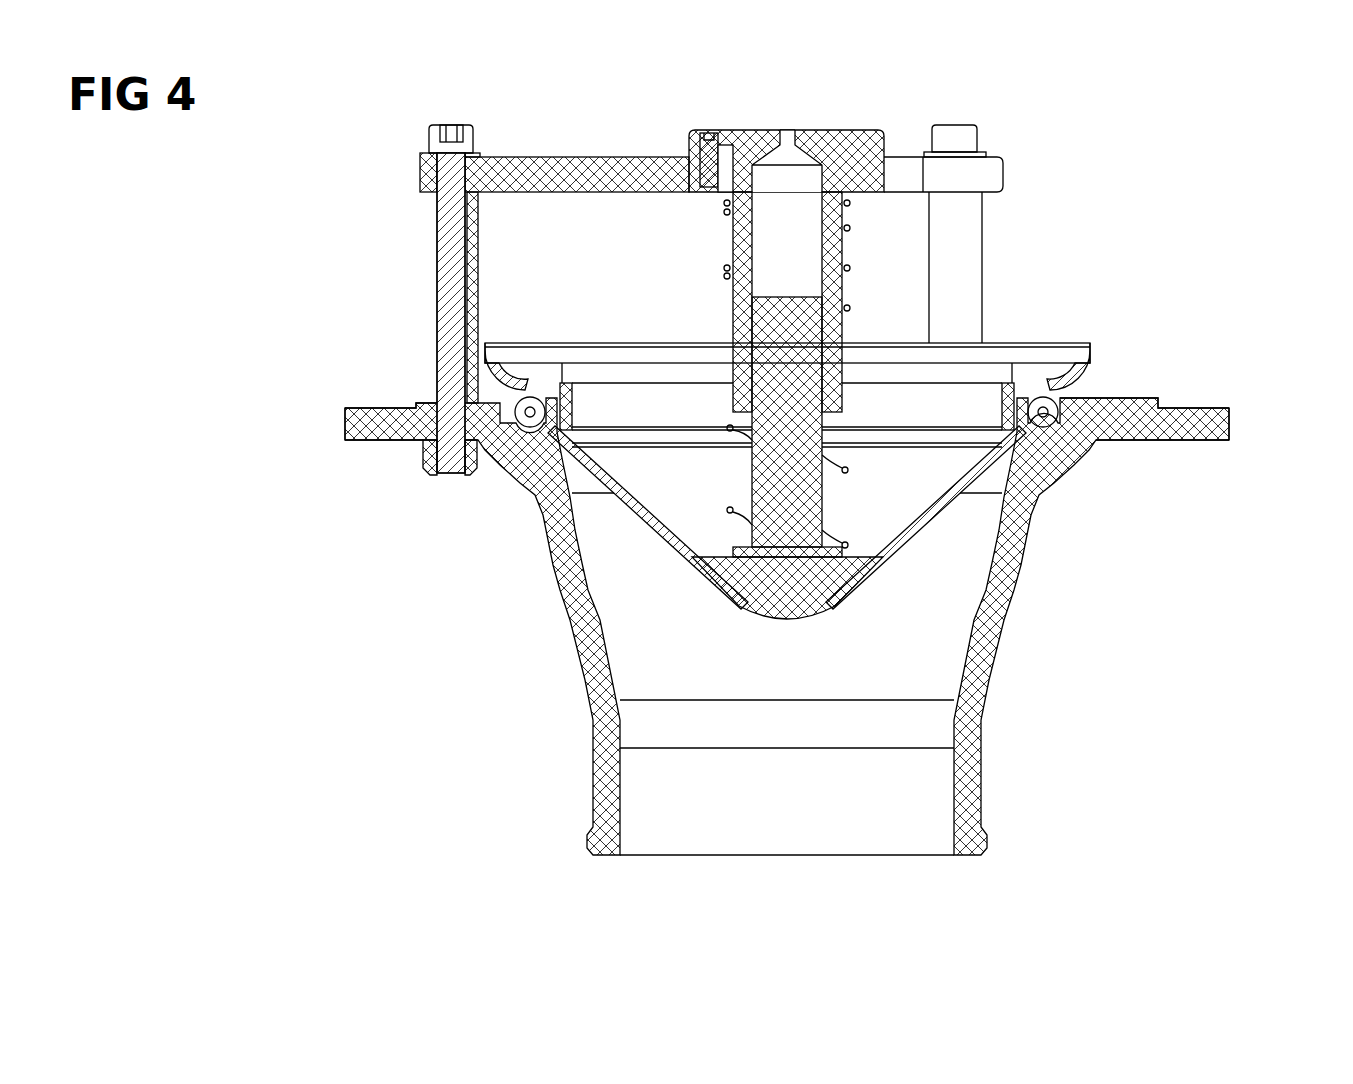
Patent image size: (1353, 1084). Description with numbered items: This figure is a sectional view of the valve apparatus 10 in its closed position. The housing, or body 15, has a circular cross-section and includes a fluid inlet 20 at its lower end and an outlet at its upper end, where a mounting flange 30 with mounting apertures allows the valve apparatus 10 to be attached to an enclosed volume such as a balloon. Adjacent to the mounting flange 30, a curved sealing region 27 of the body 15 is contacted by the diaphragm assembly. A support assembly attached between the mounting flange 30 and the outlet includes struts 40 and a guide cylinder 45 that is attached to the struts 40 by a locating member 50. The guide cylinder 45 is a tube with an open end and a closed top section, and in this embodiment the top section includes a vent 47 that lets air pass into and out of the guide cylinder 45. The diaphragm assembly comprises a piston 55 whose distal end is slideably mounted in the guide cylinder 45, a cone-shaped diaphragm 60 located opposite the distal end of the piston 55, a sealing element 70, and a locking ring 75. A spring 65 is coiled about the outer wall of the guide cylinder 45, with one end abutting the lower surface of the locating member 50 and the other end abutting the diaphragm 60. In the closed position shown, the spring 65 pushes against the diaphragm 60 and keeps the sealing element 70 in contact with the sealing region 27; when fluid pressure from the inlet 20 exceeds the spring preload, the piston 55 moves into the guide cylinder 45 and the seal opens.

The valve apparatus 10 is at (385, 648).
The body 15 is at (716, 687).
The fluid inlet 20 is at (718, 807).
The sealing region 27 is at (1075, 458).
The mounting flange 30 is at (376, 440).
The struts 40 is at (437, 240).
The guide cylinder 45 is at (851, 157).
The vent 47 is at (790, 131).
The locating member 50 is at (543, 165).
The piston 55 is at (790, 335).
The diaphragm 60 is at (690, 555).
The spring 65 is at (724, 210).
The sealing element 70 is at (530, 397).
The locking ring 75 is at (1075, 387).